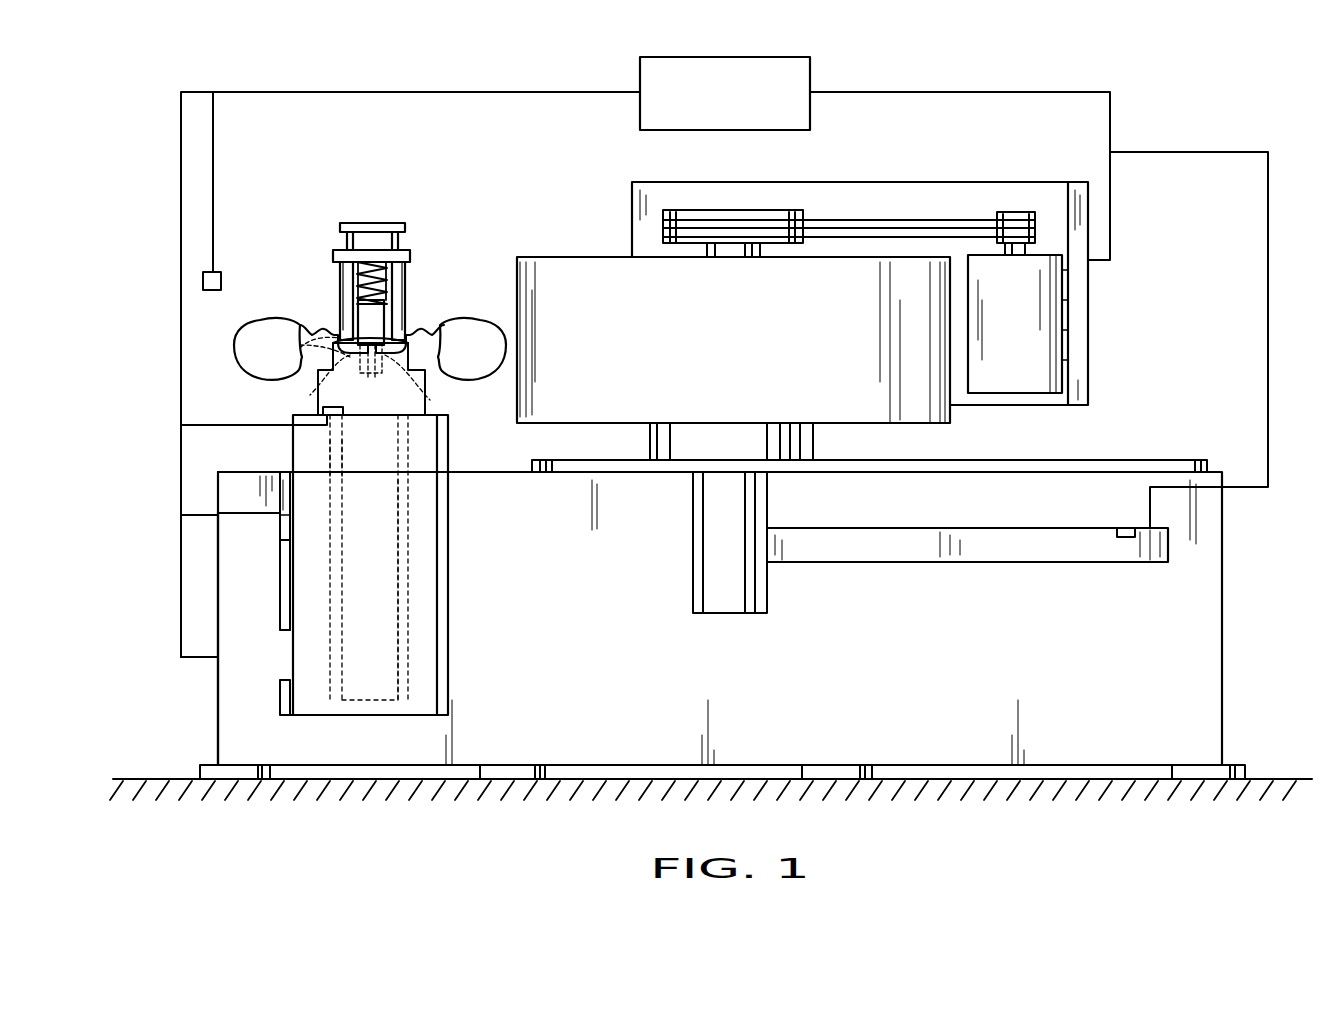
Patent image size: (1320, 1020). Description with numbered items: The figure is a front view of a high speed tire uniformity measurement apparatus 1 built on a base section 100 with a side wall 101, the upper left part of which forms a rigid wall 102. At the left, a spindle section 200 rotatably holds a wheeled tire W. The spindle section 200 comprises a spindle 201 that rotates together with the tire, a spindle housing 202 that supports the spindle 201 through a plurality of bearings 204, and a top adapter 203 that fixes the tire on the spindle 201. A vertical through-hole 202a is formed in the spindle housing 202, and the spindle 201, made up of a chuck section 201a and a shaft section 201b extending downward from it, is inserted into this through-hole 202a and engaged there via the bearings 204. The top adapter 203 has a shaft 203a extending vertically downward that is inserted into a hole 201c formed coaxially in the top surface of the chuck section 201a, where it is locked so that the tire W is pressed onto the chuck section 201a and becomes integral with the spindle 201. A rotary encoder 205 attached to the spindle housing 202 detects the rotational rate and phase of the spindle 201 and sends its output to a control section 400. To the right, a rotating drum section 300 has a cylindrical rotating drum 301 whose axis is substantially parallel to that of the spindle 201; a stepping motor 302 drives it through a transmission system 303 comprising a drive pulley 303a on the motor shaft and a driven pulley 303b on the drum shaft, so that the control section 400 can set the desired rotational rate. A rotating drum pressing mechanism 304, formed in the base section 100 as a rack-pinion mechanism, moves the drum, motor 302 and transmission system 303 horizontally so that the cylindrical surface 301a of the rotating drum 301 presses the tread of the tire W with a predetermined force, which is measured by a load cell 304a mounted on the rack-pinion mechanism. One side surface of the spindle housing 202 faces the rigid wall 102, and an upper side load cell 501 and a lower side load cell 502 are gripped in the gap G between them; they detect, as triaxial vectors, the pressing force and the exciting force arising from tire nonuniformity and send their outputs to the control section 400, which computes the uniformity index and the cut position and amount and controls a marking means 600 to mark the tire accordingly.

The measurement apparatus 1 is at (1183, 322).
The base section 100 is at (1193, 660).
The side wall 101 is at (251, 738).
The rigid wall 102 is at (225, 490).
The spindle section 200 is at (287, 220).
The spindle 201 is at (318, 398).
The chuck section 201a is at (335, 346).
The shaft section 201b is at (373, 632).
The hole 201c is at (335, 353).
The spindle housing 202 is at (435, 451).
The through-hole / side surface 202a is at (413, 531).
The top adapter 203 is at (388, 223).
The shaft 203a is at (430, 400).
The bearing 204 is at (411, 443).
The rotary encoder 205 is at (349, 407).
The rotating drum section 300 is at (1055, 422).
The rotating drum 301 is at (593, 250).
The cylindrical surface 301a is at (566, 287).
The motor 302 is at (1050, 308).
The transmission system 303 is at (906, 208).
The drive pulley 303a is at (1010, 212).
The driven pulley 303b is at (763, 210).
The rotating drum pressing mechanism 304 is at (1068, 550).
The load cell 304a is at (1130, 503).
The control section 400 is at (752, 57).
The upper side load cell 501 is at (287, 500).
The lower side load cell 502 is at (282, 666).
The marking means 600 is at (222, 272).
The tire W is at (422, 320).
The gap G is at (284, 592).